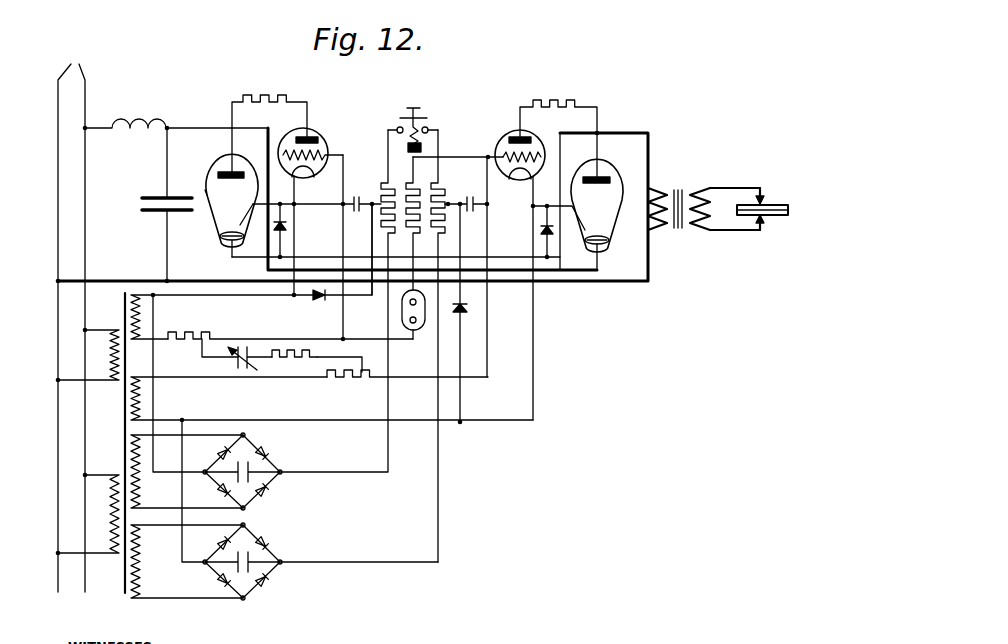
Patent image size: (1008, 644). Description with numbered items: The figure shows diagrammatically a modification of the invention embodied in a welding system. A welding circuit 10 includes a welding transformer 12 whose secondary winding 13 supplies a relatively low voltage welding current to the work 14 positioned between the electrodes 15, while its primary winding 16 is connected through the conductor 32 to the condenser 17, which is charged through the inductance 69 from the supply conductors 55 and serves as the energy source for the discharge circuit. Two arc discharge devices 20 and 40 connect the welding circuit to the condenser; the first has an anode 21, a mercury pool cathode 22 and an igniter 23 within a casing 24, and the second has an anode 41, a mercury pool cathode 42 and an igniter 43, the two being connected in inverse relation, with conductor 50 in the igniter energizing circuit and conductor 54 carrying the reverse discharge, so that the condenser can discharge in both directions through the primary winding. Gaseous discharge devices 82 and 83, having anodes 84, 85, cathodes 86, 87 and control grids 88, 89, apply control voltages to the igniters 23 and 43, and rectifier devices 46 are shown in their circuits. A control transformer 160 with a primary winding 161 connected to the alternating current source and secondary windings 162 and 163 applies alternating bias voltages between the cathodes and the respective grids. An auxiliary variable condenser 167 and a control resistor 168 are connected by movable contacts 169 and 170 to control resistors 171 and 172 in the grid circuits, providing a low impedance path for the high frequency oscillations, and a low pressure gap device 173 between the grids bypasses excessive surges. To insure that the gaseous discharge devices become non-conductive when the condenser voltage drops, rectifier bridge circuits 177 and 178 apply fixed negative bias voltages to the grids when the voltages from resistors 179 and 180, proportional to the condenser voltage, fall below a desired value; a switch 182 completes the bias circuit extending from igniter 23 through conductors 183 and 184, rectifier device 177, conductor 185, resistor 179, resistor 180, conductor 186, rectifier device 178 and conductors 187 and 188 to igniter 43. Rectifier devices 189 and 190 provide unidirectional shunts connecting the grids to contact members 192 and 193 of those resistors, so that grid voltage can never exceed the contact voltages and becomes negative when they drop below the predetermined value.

The welding circuit 10 is at (732, 189).
The welding transformer 12 is at (704, 205).
The secondary winding 13 is at (705, 232).
The work 14 is at (775, 205).
The electrodes 15 is at (762, 195).
The primary winding 16 is at (660, 232).
The condenser 17 is at (157, 196).
The arc discharge device 20 is at (219, 193).
The anode 21 is at (236, 170).
The mercury pool cathode 22 is at (222, 243).
The igniter 23 is at (240, 218).
The casing 24 is at (207, 185).
The conductor 32 is at (572, 282).
The arc discharge device 40 is at (584, 201).
The anode 41 is at (607, 184).
The mercury pool cathode 42 is at (608, 243).
The igniter 43 is at (588, 230).
The rectifier 46 is at (287, 223).
The conductor 50 is at (262, 265).
The conductor 54 is at (560, 255).
The supply conductors 55 is at (71, 318).
The inductance 69 is at (141, 120).
The gaseous discharge device 82 is at (301, 196).
The gaseous discharge device 83 is at (506, 260).
The anode 84 is at (300, 137).
The anode 85 is at (530, 136).
The cathode 86 is at (300, 178).
The cathode 87 is at (515, 181).
The control grid 88 is at (327, 153).
The control grid 89 is at (503, 153).
The control transformer 160 is at (294, 401).
The primary winding 161 is at (112, 386).
The secondary winding 162 is at (141, 326).
The secondary winding 163 is at (141, 400).
The auxiliary variable condenser 167 is at (235, 363).
The control resistor 168 is at (313, 356).
The movable contact 169 is at (200, 347).
The movable contact 170 is at (363, 370).
The control resistor 171 is at (206, 328).
The control resistor 172 is at (350, 386).
The low pressure gap device 173 is at (427, 323).
The rectifier bridge circuit 177 is at (298, 454).
The rectifier bridge circuit 178 is at (303, 544).
The resistor 179 is at (382, 190).
The resistor 180 is at (446, 198).
The switch 182 is at (398, 128).
The conductor 183 is at (286, 228).
The conductor 184 is at (153, 369).
The conductor 185 is at (397, 330).
The conductor 186 is at (440, 490).
The conductor 187 is at (180, 493).
The conductor 188 is at (352, 420).
The rectifier device 189 is at (356, 211).
The rectifier device 190 is at (315, 300).
The contact member 192 is at (372, 235).
The contact member 193 is at (455, 212).